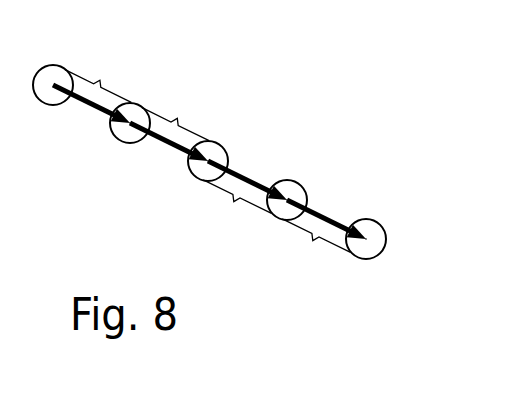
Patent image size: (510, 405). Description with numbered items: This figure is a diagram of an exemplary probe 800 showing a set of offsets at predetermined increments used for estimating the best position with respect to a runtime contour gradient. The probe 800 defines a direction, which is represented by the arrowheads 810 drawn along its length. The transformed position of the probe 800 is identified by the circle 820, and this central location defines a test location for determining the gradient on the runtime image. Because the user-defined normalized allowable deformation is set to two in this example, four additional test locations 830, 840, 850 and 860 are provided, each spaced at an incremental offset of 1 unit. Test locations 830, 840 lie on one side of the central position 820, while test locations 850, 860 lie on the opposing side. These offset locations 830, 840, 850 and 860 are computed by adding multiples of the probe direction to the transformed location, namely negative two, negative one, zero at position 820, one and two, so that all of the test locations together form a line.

The probe 800 is at (243, 172).
The arrowhead 810 is at (204, 161).
The circle (transformed position of the probe) 820 is at (212, 139).
The test location 830 is at (62, 67).
The test location 840 is at (108, 128).
The test location 850 is at (301, 181).
The test location 860 is at (380, 225).
The incremental offset unit 1 is at (208, 158).